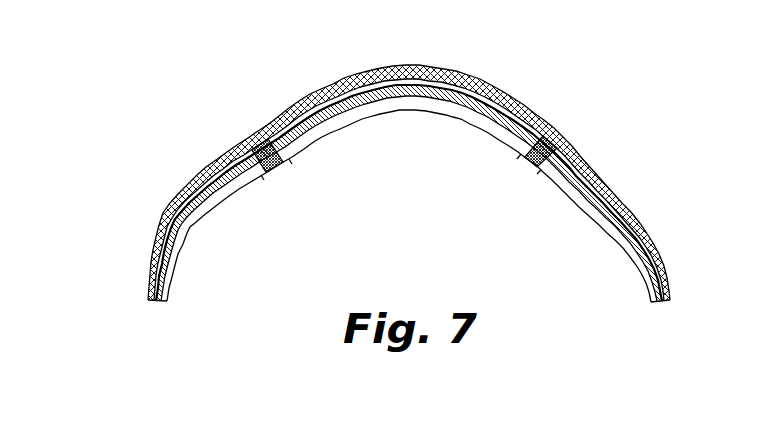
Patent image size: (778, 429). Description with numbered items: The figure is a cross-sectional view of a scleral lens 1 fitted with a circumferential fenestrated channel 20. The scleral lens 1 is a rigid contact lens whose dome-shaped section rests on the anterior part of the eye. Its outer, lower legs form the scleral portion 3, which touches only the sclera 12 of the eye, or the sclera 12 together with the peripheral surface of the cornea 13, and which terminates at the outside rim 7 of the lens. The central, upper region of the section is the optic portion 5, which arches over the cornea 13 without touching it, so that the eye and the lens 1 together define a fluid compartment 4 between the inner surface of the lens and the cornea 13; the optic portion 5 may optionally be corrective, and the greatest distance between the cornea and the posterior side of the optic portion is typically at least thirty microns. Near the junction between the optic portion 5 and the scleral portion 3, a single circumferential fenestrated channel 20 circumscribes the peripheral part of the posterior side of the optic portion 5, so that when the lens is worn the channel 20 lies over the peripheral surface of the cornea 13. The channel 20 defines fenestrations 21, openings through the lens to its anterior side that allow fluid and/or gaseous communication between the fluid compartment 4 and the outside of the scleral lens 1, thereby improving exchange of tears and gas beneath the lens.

The scleral lens 1 is at (399, 155).
The scleral portion 3 is at (403, 161).
The fluid compartment 4 is at (409, 176).
The optic portion 5 is at (370, 65).
The outside rim 7 is at (155, 262).
The sclera 12 is at (193, 240).
The cornea 13 is at (400, 112).
The circumferential fenestrated channel 20 is at (262, 130).
The fenestrations 21 is at (238, 150).